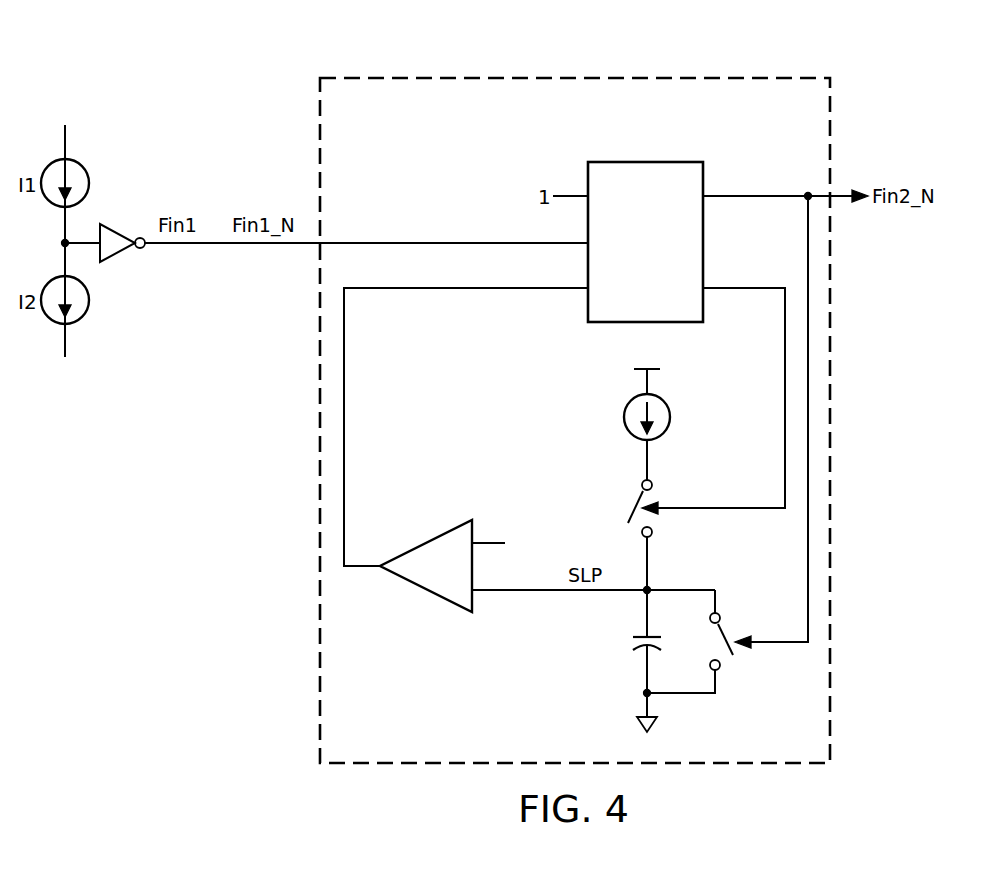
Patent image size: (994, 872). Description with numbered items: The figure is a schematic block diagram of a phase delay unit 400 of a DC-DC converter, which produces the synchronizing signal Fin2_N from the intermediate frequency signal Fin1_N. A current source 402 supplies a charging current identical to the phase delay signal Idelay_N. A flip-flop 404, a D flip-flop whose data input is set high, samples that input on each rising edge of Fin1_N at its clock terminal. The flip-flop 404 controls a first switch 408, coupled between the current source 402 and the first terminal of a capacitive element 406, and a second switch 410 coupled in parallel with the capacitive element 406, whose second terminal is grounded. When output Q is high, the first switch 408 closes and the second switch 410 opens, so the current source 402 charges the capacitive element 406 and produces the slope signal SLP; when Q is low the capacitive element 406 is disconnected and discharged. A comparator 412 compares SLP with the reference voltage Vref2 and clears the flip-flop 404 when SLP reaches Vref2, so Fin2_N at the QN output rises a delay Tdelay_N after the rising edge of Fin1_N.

The phase delay unit 400 is at (517, 74).
The current source 402 is at (625, 420).
The flip-flop 404 is at (652, 162).
The capacitive element 406 is at (633, 646).
The first switch 408 is at (637, 500).
The second switch 410 is at (728, 630).
The comparator 412 is at (425, 594).